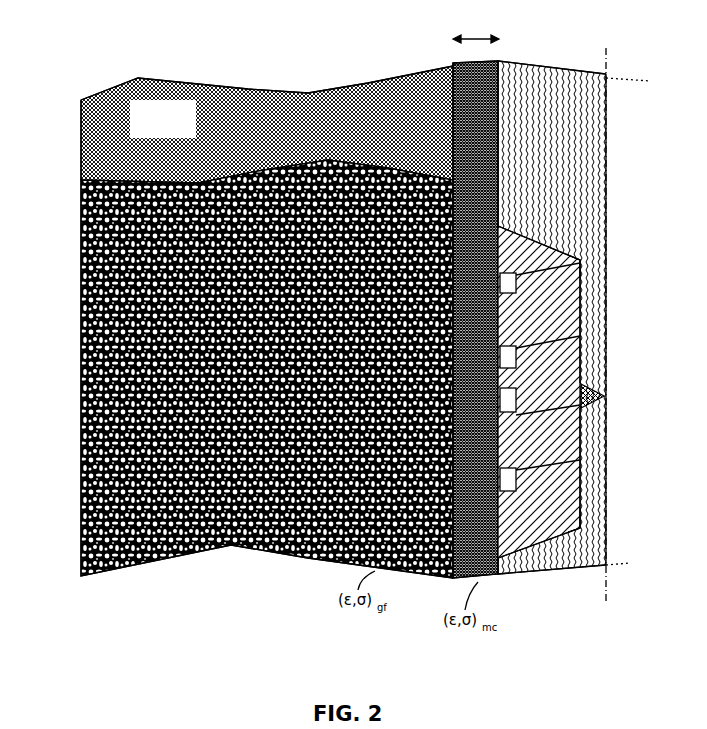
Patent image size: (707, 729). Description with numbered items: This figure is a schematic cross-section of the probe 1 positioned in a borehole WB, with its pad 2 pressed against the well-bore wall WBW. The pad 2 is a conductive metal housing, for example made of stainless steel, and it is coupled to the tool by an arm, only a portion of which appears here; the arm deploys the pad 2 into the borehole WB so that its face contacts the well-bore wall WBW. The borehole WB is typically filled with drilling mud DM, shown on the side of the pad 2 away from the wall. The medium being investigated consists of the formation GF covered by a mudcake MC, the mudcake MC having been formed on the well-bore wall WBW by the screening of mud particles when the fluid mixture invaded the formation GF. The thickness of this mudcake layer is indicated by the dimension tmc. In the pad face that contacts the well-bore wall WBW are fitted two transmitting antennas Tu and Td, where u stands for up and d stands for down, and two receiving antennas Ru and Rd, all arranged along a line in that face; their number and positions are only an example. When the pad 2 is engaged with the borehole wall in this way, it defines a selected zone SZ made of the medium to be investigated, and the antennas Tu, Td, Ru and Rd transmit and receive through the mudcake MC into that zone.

The formation GF is at (172, 124).
The selected zone SZ is at (278, 538).
The mudcake MC is at (490, 184).
The drilling mud DM is at (576, 115).
The probe 1 is at (600, 238).
The pad 2 is at (572, 512).
The receiving antenna Ru is at (572, 253).
The transmitting antenna Tu is at (572, 330).
The transmitting antenna Td is at (578, 400).
The receiving antenna Rd is at (572, 453).
The borehole WB is at (576, 580).
The well-bore wall WBW is at (383, 66).
The metal coating thickness tmc is at (476, 30).